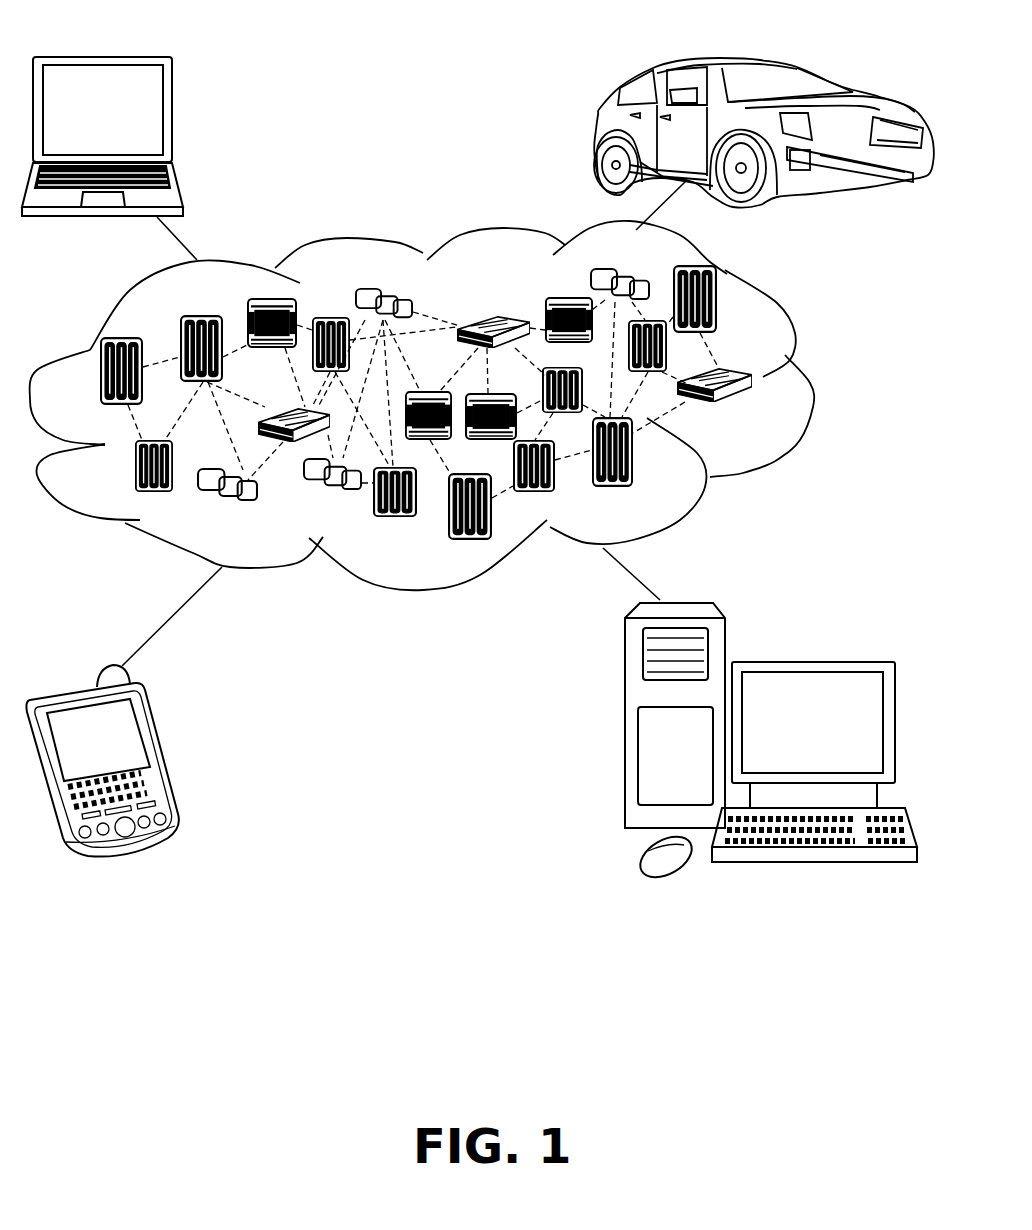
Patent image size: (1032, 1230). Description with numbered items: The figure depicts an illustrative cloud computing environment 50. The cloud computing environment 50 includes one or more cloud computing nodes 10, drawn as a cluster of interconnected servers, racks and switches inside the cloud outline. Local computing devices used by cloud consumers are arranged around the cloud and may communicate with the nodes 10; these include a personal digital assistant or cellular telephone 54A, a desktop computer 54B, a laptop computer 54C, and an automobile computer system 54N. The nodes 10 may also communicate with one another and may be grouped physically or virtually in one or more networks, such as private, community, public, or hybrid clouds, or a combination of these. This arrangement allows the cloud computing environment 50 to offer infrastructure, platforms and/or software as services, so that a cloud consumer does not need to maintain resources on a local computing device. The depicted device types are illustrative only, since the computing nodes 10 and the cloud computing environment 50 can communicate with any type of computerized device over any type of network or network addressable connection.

The cloud computing nodes 10 is at (767, 413).
The cloud computing environment 50 is at (810, 378).
The personal digital assistant (PDA) or cellular telephone 54A is at (160, 752).
The desktop computer 54B is at (808, 660).
The laptop computer 54C is at (173, 119).
The automobile computer system 54N is at (597, 135).